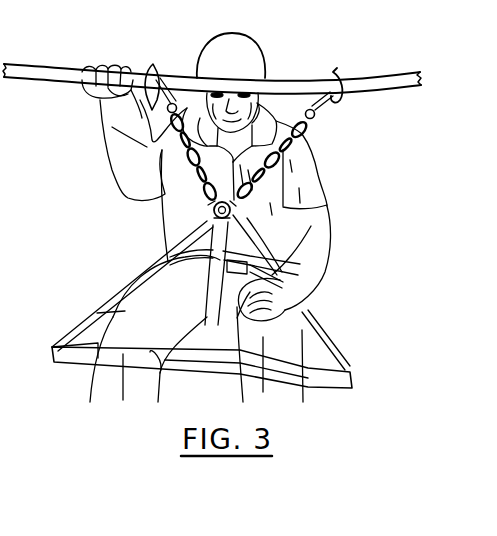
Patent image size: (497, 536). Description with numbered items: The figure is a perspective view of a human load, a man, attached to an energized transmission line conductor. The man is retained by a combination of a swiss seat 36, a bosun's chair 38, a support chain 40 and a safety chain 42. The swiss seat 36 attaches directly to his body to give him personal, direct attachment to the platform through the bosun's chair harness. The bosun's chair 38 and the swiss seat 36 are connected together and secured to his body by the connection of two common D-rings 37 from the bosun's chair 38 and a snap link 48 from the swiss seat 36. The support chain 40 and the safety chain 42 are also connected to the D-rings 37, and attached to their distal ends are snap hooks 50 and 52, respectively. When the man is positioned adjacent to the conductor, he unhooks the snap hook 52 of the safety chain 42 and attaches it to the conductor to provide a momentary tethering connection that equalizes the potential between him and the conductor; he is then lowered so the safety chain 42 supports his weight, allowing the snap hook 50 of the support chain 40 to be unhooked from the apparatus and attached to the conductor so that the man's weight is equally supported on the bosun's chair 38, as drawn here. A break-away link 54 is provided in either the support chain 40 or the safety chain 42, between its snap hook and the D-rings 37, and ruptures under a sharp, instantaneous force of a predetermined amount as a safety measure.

The swiss seat 36 is at (170, 249).
The D-rings 37 is at (197, 212).
The bosun's chair 38 is at (320, 370).
The support chain 40 is at (290, 140).
The safety chain 42 is at (152, 145).
The snap link 48 is at (250, 210).
The snap hook 50 is at (335, 70).
The snap hook 52 is at (154, 64).
The break-away link 54 is at (198, 185).